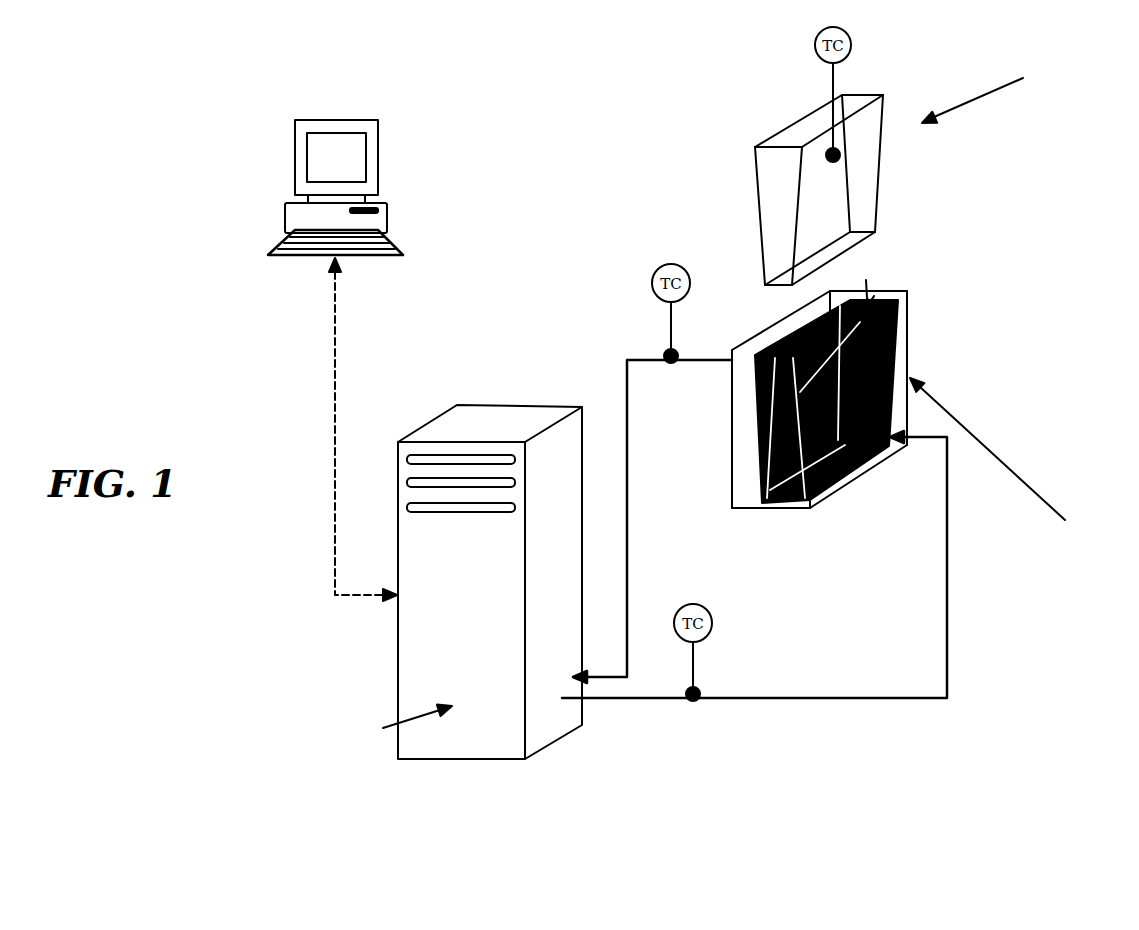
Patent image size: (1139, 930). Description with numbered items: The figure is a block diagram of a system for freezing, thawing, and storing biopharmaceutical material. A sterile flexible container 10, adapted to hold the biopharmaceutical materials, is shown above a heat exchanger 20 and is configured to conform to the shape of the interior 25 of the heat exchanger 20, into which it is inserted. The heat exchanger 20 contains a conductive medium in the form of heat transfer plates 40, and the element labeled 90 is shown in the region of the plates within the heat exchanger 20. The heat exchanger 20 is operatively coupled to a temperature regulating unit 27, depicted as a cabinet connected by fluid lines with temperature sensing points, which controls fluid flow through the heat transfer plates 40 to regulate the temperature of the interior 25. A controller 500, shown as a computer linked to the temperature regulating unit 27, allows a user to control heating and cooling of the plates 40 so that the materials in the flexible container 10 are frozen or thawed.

The controller 500 is at (376, 118).
The flexible container 10 is at (855, 100).
The heat exchanger 20 is at (873, 463).
The interior 25 is at (866, 302).
The heat transfer plates 40 is at (900, 312).
The screen support 90 is at (797, 330).
The temperature regulating unit 27 is at (540, 740).